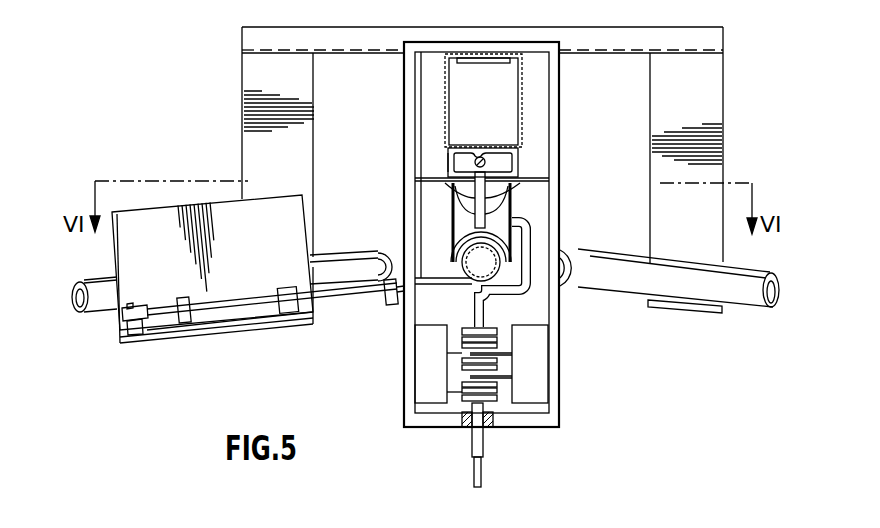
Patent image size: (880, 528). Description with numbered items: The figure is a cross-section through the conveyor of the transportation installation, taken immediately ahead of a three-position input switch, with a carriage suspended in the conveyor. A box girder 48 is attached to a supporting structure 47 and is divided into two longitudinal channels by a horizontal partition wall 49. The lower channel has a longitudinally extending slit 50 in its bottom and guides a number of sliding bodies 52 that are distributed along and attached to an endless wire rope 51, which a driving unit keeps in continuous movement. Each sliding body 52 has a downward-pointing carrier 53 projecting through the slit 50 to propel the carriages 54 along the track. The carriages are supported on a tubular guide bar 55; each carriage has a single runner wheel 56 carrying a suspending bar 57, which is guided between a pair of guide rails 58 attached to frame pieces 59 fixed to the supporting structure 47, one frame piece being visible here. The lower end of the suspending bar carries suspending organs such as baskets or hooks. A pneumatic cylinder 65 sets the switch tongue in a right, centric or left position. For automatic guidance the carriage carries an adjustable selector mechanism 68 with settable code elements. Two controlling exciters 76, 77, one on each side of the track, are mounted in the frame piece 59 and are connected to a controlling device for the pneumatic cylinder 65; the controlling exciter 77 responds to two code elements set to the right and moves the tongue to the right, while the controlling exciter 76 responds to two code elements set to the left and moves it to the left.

The supporting structure 47 is at (650, 74).
The box girder 48 is at (443, 106).
The horizontal partition wall 49 is at (476, 144).
The longitudinally extending slit 50 is at (513, 193).
The endless wire rope 51 is at (518, 161).
The sliding body 52 is at (450, 162).
The rolling diaphragm 53 is at (476, 190).
The carriage 54 is at (432, 208).
The tubular guide bar 55 is at (510, 257).
The runner wheel 56 is at (463, 226).
The suspending bar 57 is at (486, 312).
The guide rail 58 is at (470, 430).
The frame piece 59 is at (553, 405).
The pneumatic cylinder 65 is at (262, 306).
The selector mechanism 68 is at (448, 341).
The controlling exciter 76 is at (423, 383).
The controlling exciter 77 is at (534, 368).